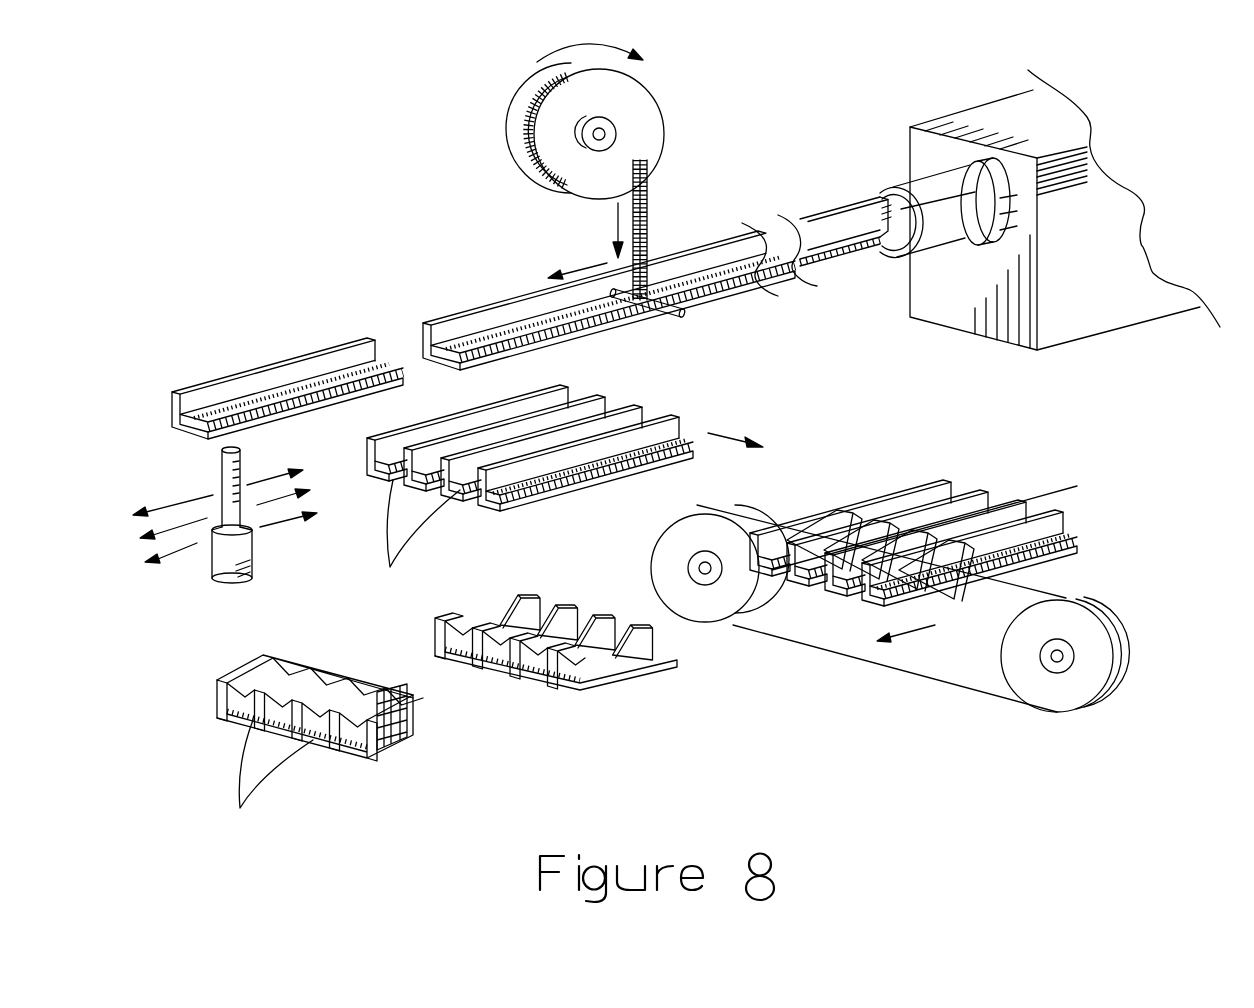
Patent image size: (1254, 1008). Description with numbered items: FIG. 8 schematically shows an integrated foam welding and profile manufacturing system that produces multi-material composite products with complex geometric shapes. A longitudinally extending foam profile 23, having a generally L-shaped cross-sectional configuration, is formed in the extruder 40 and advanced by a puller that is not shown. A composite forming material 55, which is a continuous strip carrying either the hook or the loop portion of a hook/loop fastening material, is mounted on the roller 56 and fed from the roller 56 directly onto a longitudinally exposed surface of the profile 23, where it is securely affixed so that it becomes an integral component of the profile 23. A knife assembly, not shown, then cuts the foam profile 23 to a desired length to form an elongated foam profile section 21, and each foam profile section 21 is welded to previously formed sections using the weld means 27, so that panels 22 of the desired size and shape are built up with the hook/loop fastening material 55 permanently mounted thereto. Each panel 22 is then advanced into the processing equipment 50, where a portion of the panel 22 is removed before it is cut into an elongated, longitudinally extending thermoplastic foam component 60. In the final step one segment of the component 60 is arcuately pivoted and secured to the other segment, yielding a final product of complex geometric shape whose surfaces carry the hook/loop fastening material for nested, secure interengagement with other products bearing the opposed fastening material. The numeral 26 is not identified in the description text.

The foam profile section 21 is at (305, 372).
The panel 22 is at (662, 432).
The foam profile 23 is at (823, 233).
The honeycomb core 26 is at (390, 567).
The weld means 27 is at (227, 480).
The extruder 40 is at (932, 152).
The processing equipment 50 is at (1080, 673).
The composite forming material 55 is at (645, 213).
The roller 56 is at (563, 147).
The thermoplastic foam component 60 is at (390, 737).